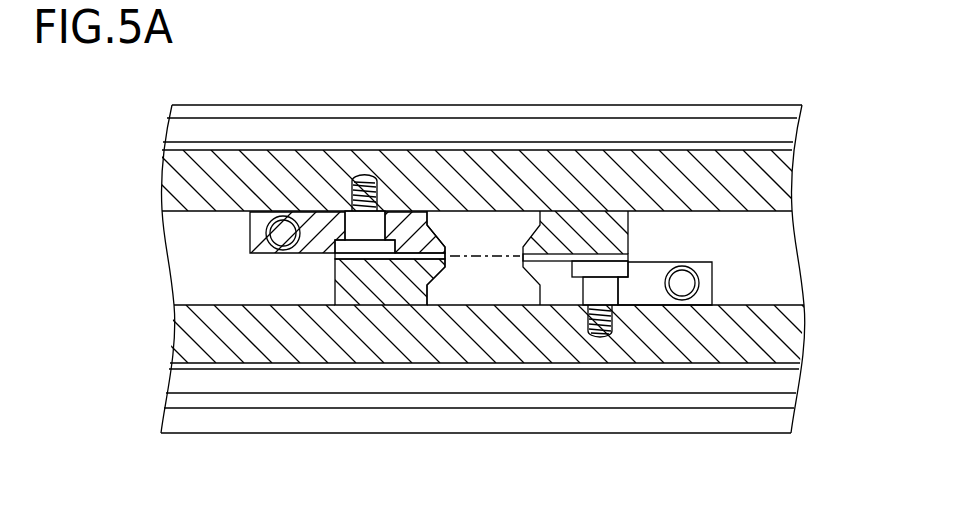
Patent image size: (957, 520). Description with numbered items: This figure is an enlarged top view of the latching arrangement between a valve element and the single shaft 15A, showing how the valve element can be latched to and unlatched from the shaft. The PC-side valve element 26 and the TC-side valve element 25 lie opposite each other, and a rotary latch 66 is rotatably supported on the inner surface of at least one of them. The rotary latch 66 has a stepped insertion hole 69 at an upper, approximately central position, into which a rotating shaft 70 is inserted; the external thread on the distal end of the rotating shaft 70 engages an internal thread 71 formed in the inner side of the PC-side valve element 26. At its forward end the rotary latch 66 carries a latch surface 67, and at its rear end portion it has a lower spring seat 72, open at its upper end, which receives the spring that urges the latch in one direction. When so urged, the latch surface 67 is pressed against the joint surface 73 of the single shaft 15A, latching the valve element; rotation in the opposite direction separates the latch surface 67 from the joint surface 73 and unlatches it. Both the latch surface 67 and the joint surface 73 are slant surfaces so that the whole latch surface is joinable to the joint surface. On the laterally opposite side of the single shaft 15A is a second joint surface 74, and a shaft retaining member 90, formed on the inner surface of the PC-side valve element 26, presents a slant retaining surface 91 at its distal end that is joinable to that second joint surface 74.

The single shaft 15A is at (480, 284).
The TC-side valve element 25 is at (718, 330).
The PC-side valve element 26 is at (759, 173).
The rotary latch 66 is at (328, 226).
The latch surface 67 is at (425, 245).
The stepped insertion hole 69 is at (348, 222).
The rotating shaft 70 is at (363, 250).
The internal thread 71 is at (363, 177).
The lower spring seat 72 is at (280, 230).
The joint surface 73 is at (416, 262).
The second joint surface 74 is at (538, 232).
The shaft retaining member 90 is at (613, 228).
The retaining surface 91 is at (523, 241).